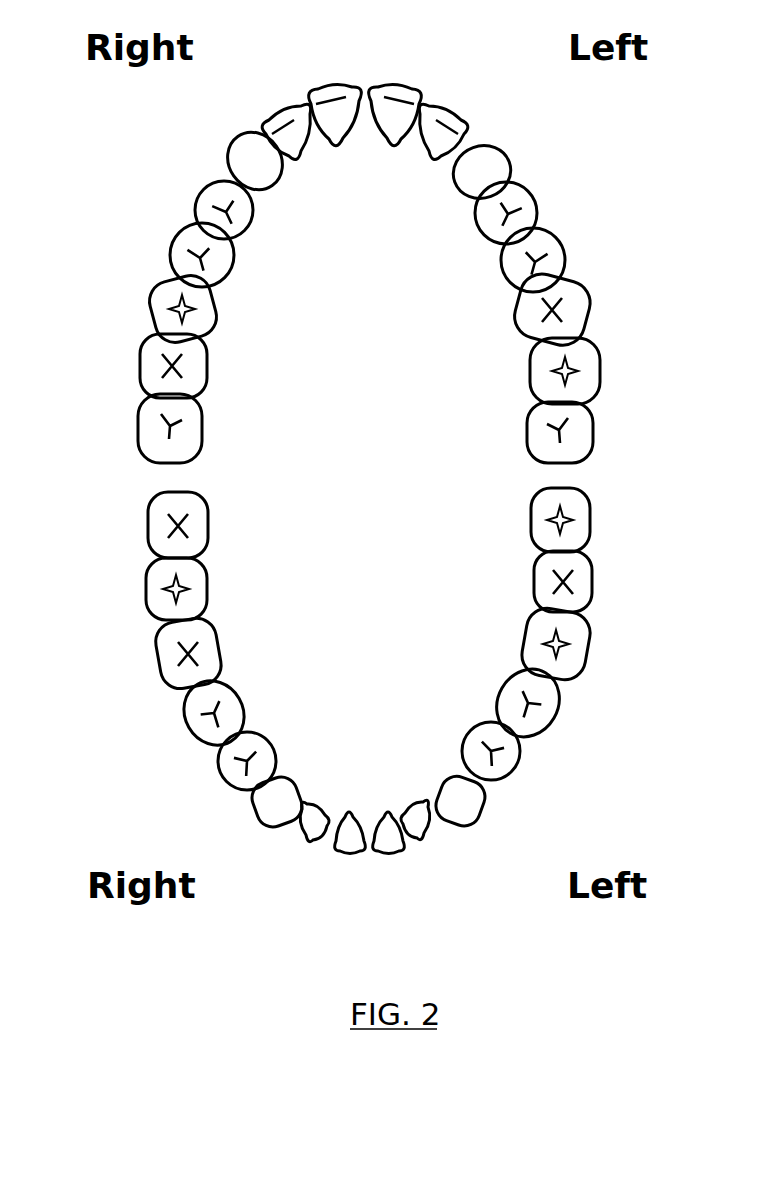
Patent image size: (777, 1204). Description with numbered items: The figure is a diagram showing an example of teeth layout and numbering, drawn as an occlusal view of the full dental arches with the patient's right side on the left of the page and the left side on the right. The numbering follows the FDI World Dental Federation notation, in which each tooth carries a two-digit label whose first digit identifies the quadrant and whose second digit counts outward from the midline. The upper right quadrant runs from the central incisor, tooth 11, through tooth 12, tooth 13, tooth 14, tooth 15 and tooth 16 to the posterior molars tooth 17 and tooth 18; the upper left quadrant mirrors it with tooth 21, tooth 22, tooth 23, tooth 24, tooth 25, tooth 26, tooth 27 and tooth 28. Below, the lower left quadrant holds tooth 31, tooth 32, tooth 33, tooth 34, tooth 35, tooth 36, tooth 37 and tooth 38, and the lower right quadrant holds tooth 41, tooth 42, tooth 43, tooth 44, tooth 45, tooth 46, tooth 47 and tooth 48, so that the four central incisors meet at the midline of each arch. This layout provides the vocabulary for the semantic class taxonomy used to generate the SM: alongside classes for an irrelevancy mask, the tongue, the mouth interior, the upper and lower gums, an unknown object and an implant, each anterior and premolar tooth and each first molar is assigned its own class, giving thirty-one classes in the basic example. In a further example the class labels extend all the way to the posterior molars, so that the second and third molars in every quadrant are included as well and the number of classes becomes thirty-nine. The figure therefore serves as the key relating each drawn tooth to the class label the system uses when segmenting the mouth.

The tooth 11 is at (335, 89).
The tooth 12 is at (271, 111).
The tooth 13 is at (231, 159).
The tooth 14 is at (192, 203).
The tooth 15 is at (170, 253).
The tooth 16 is at (155, 309).
The tooth 17 is at (143, 366).
The tooth 18 is at (141, 428).
The tooth 21 is at (397, 89).
The tooth 22 is at (469, 112).
The tooth 23 is at (511, 163).
The tooth 24 is at (541, 207).
The tooth 25 is at (567, 258).
The tooth 26 is at (583, 309).
The tooth 27 is at (598, 371).
The tooth 28 is at (593, 432).
The tooth 31 is at (398, 856).
The tooth 32 is at (438, 843).
The tooth 33 is at (485, 809).
The tooth 34 is at (521, 761).
The tooth 35 is at (553, 703).
The tooth 36 is at (584, 644).
The tooth 37 is at (593, 581).
The tooth 38 is at (592, 520).
The tooth 41 is at (343, 856).
The tooth 42 is at (296, 844).
The tooth 43 is at (253, 811).
The tooth 44 is at (218, 769).
The tooth 45 is at (187, 713).
The tooth 46 is at (159, 653).
The tooth 47 is at (147, 592).
The tooth 48 is at (147, 525).